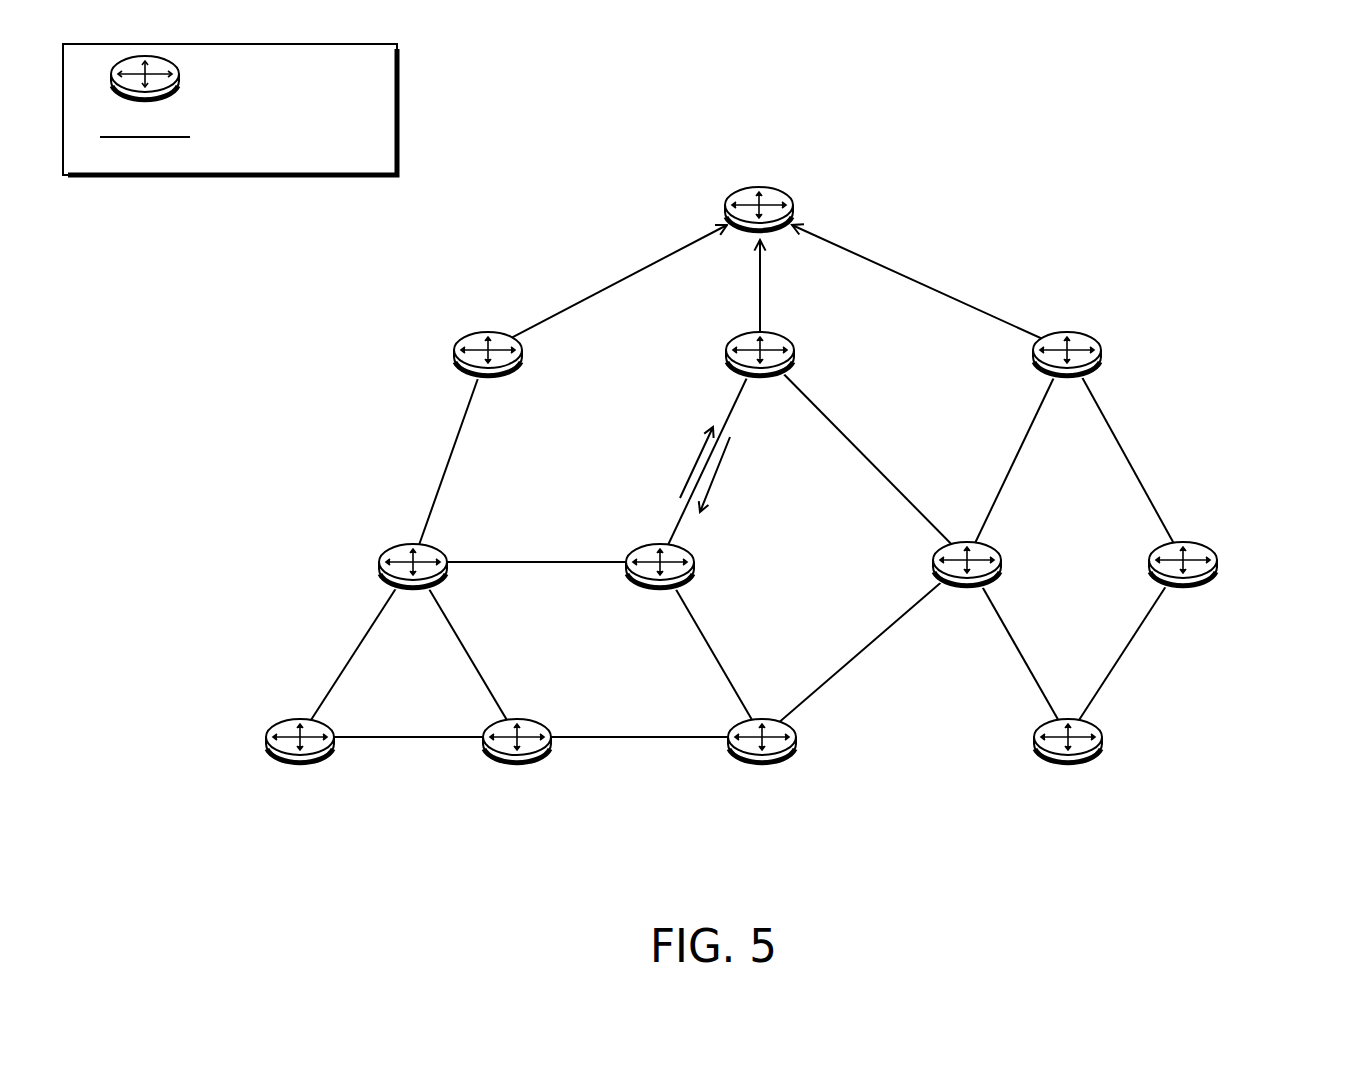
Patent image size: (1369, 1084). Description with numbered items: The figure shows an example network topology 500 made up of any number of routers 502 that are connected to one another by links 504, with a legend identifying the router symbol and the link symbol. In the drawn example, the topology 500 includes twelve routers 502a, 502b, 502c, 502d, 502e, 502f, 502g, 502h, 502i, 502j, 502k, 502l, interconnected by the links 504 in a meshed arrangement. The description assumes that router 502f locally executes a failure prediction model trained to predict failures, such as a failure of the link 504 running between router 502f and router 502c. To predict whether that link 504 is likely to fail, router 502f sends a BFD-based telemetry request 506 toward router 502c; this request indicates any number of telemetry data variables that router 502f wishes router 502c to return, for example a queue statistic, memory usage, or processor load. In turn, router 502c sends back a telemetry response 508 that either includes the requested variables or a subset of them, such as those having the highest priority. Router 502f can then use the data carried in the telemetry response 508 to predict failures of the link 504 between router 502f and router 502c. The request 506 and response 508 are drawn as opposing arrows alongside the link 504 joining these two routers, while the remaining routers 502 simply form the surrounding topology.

The network topology 500 is at (1258, 115).
The routers 502 is at (240, 80).
The links 504 is at (221, 135).
The telemetry request 506 is at (640, 451).
The telemetry response 508 is at (777, 490).
The router 502a is at (759, 193).
The router 502b is at (488, 376).
The router 502c is at (760, 377).
The router 502d is at (1067, 377).
The router 502e is at (413, 586).
The router 502f is at (660, 586).
The router 502g is at (967, 584).
The router 502h is at (1183, 584).
The router 502i is at (300, 761).
The router 502j is at (517, 761).
The router 502k is at (762, 761).
The router 502l is at (1068, 761).